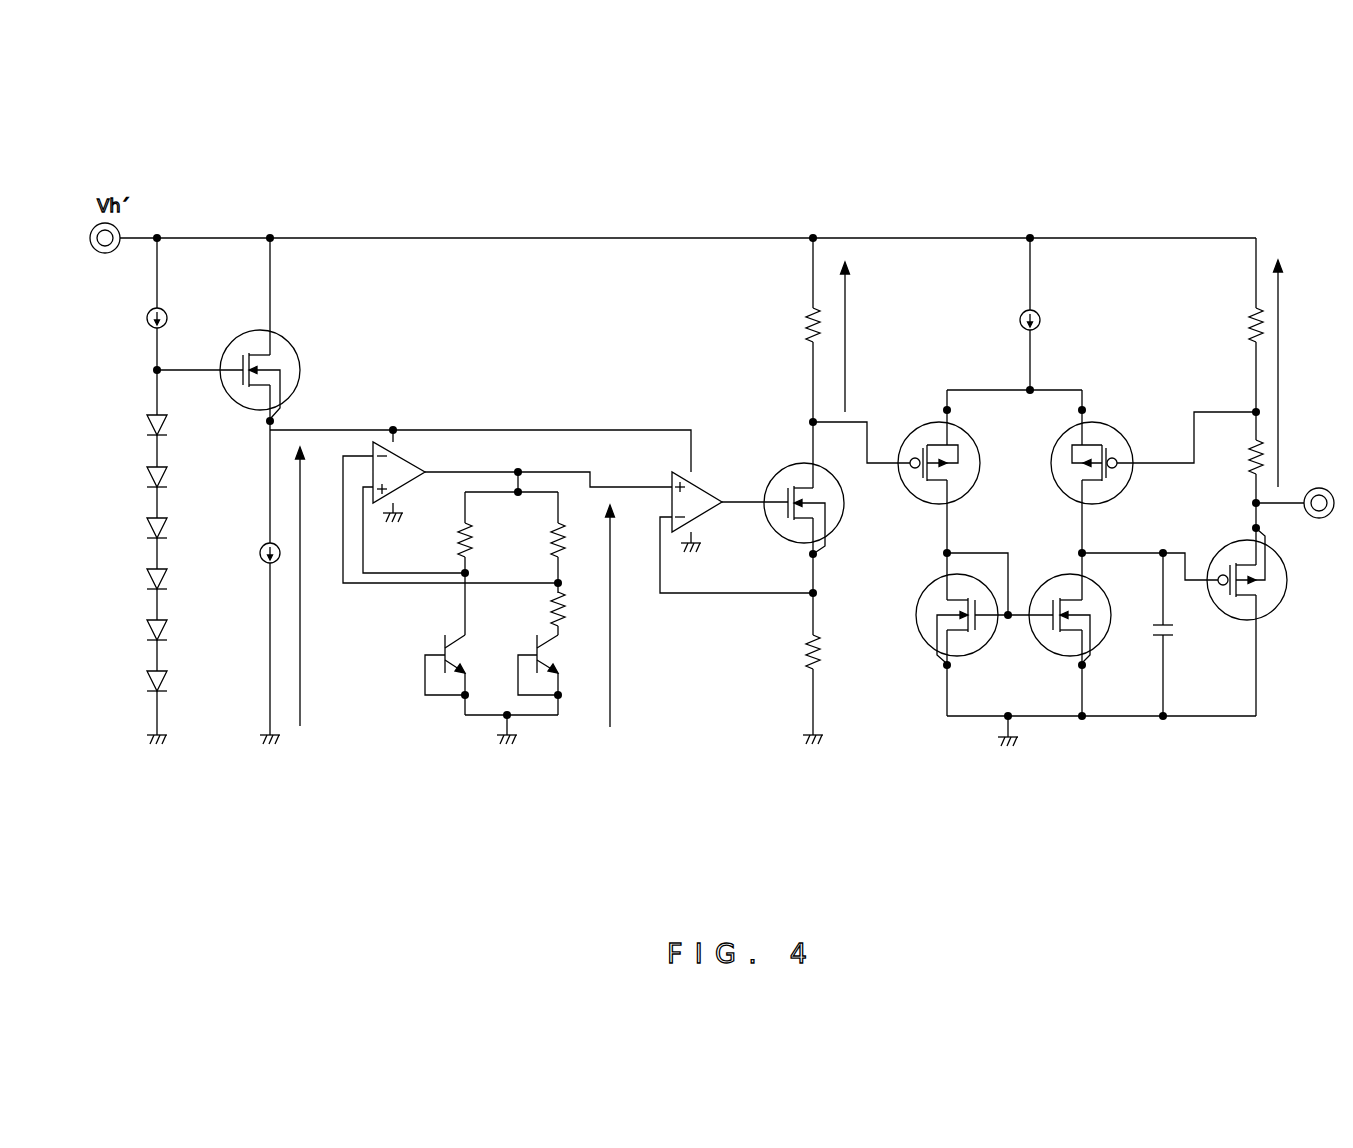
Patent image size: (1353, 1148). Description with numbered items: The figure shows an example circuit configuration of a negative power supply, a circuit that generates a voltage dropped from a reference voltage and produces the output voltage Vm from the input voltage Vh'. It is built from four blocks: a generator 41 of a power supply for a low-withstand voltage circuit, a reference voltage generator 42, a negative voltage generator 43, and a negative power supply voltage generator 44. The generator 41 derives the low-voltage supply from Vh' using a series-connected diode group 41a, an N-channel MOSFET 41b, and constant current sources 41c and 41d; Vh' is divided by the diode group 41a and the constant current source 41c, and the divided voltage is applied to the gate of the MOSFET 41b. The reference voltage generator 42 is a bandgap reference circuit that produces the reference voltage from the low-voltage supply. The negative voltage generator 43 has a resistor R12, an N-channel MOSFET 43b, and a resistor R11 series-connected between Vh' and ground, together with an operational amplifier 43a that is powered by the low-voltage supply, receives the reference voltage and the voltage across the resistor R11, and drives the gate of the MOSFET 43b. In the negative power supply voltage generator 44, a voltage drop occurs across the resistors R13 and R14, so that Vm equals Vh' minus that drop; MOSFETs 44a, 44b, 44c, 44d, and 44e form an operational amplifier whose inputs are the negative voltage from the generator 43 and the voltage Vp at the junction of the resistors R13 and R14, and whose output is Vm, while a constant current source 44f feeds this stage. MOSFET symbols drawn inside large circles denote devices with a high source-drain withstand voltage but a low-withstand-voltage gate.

The generator of a power supply (VDD) for a low-withstand voltage circuit 41 is at (214, 551).
The diode group 41a is at (145, 408).
The N-channel MOSFET 41b is at (292, 346).
The constant current source 41c is at (164, 312).
The constant current source 41d is at (262, 561).
The reference voltage (Vref) generator 42 is at (480, 621).
The negative voltage (Vh'-V1) generator 43 is at (785, 527).
The operational amplifier 43a is at (700, 487).
The N-channel MOSFET 43b is at (833, 535).
The negative power supply voltage (Vm=Vh'-V2) generator 44 is at (1116, 540).
The MOSFET 44a is at (972, 445).
The MOSFET 44b is at (987, 645).
The MOSFET 44c is at (1120, 436).
The MOSFET 44d is at (1107, 595).
The MOSFET 44e is at (1278, 610).
The current source 44f is at (1040, 313).
The resistor R11 is at (788, 652).
The resistor R12 is at (792, 325).
The resistor R13 is at (1235, 325).
The resistor R14 is at (1236, 457).